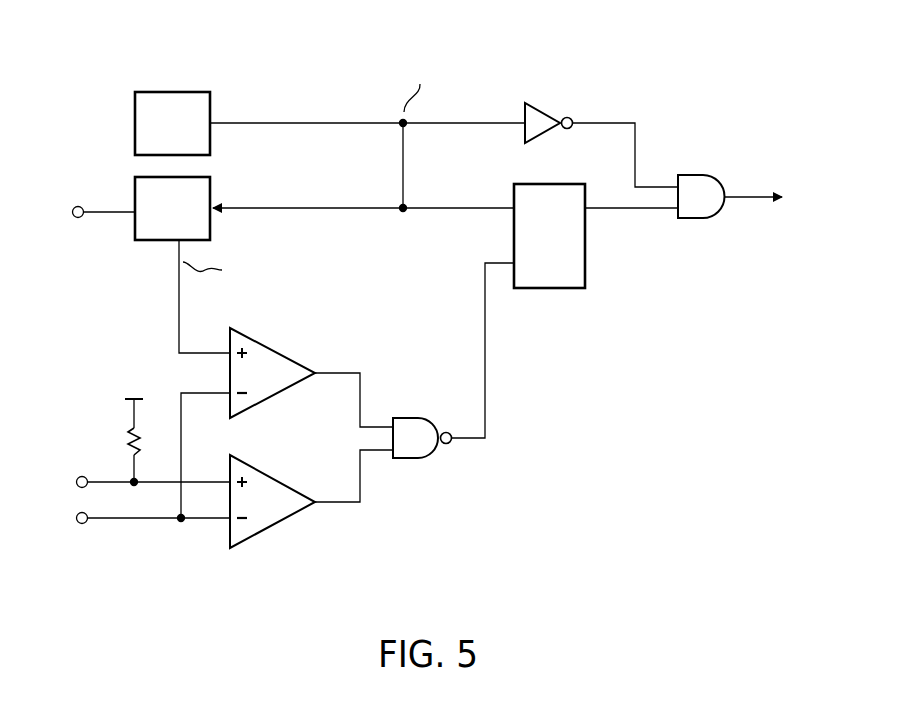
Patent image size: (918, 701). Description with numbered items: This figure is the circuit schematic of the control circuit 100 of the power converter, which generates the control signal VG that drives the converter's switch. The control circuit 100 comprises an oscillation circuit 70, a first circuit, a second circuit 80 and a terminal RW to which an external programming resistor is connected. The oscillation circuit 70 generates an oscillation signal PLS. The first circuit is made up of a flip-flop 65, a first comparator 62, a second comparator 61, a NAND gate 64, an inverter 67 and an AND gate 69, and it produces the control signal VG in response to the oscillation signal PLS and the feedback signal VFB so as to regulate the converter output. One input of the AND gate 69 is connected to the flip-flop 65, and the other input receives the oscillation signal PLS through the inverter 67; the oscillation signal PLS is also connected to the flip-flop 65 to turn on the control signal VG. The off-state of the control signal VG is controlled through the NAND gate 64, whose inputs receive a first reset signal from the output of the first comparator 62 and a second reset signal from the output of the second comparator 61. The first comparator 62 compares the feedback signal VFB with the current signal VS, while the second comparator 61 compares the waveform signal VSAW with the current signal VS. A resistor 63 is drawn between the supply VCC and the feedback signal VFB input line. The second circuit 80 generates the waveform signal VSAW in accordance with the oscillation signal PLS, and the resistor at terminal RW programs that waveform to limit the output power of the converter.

The control circuit 100 is at (707, 22).
The oscillation circuit 70 is at (178, 92).
The second circuit 80 is at (152, 240).
The inverter 67 is at (545, 103).
The flip-flop 65 is at (588, 262).
The AND gate 69 is at (697, 174).
The NAND gate 64 is at (409, 418).
The second comparator 61 is at (270, 342).
The first comparator 62 is at (262, 530).
The resistor 63 is at (118, 445).